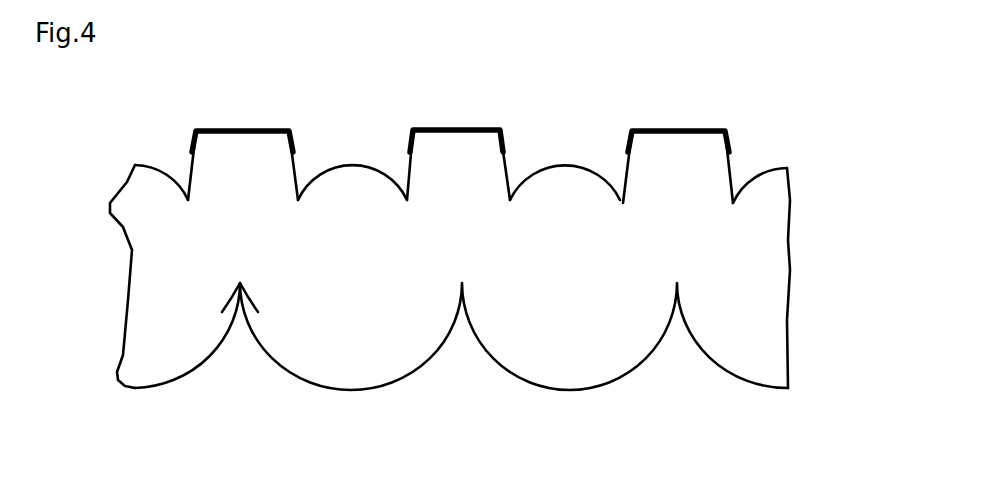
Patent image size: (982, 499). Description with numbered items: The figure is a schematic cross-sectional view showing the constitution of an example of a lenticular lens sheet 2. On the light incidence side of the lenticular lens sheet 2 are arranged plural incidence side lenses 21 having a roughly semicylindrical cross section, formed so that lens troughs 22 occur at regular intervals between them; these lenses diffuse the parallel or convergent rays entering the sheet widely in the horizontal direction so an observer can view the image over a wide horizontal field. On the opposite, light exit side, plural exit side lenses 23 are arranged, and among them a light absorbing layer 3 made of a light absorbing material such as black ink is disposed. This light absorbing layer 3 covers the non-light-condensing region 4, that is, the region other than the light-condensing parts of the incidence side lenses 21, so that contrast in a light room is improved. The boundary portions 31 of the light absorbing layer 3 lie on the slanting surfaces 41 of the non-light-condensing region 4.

The lenticular lens sheet 2 is at (826, 251).
The light absorbing layer 3 is at (255, 126).
The boundary portions 31 is at (296, 150).
The non-light-condensing region 4 is at (690, 138).
The slanting surfaces 41 is at (627, 155).
The incidence side lenses 21 is at (402, 376).
The lens troughs 22 is at (240, 292).
The exit side lenses 23 is at (545, 167).